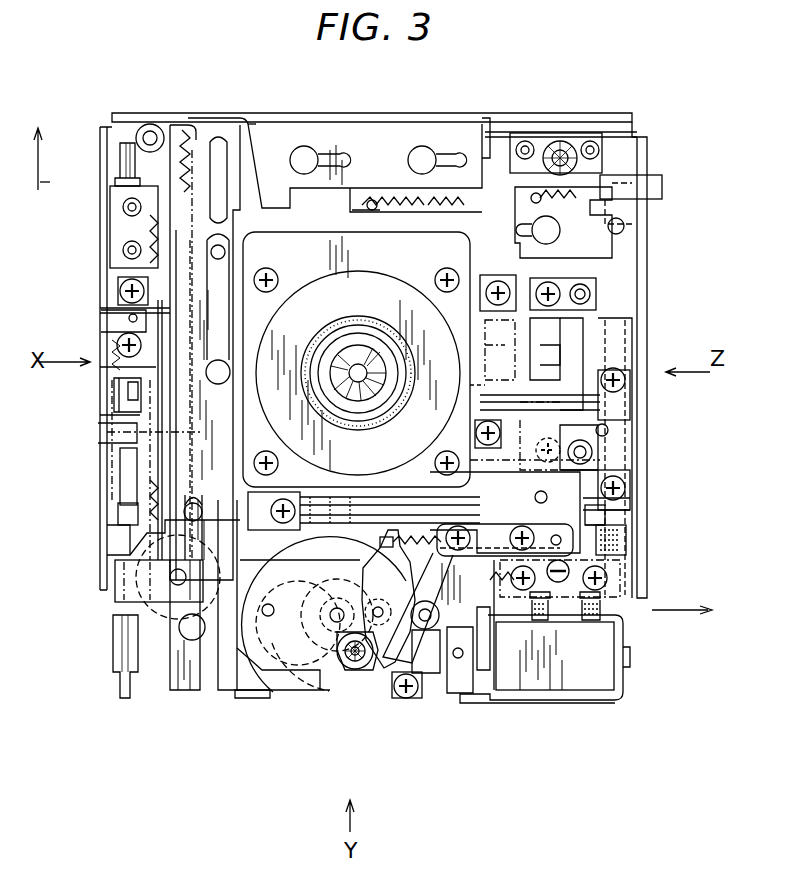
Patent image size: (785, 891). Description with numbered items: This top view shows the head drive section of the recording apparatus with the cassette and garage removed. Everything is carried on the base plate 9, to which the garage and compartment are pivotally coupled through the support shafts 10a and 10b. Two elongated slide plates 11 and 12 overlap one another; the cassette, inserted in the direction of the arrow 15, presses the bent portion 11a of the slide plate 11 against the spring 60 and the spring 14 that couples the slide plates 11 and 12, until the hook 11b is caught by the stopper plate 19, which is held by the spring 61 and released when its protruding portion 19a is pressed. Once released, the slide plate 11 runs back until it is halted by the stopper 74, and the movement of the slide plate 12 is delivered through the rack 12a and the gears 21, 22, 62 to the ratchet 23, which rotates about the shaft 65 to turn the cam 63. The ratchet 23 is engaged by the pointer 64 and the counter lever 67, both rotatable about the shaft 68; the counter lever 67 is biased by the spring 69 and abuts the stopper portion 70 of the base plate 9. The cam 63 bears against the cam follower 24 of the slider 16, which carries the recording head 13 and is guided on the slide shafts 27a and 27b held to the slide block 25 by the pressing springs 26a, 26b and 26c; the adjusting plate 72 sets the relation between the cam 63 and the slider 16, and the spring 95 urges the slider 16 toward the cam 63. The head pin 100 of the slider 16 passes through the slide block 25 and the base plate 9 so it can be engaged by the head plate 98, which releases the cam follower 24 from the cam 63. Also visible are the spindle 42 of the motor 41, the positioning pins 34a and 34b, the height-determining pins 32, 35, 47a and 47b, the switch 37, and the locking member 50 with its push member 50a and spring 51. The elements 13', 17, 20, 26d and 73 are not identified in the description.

The base plate 9 is at (640, 137).
The support shaft 10a is at (113, 650).
The support shaft 10b is at (120, 154).
The slide plate 11 is at (196, 125).
The bent portion 11a is at (214, 118).
The hook 11b is at (256, 122).
The slide plate 12 is at (112, 434).
The rack 12a is at (228, 692).
The recording head 13 is at (554, 364).
The head carriage reference 13' is at (452, 372).
The spring 14 is at (180, 182).
The arrow 15 is at (40, 180).
The slider 16 is at (628, 542).
The housing box 17 is at (538, 690).
The stopper plate 19 is at (358, 135).
The protruding portion 19a is at (484, 118).
The eject block 20 is at (115, 598).
The gear 21 is at (140, 547).
The gear 22 is at (200, 670).
The ratchet 23 is at (340, 704).
The cam follower 24 is at (440, 680).
The slide block 25 is at (622, 454).
The presser spring 26a is at (285, 492).
The pressing spring 26b is at (620, 514).
The pressing spring 26c is at (630, 410).
The motor rotor 26d is at (462, 397).
The slide shaft 27a is at (620, 524).
The slide shaft 27b is at (632, 430).
The height-determining pin 32 is at (608, 440).
The positioning pin 34a is at (356, 670).
The positioning pin 34b is at (560, 150).
The height-determining pin 35 is at (150, 124).
The switch 37 is at (120, 488).
The motor 41 is at (304, 290).
The spindle 42 is at (362, 365).
The height-determining pin 47a is at (592, 460).
The height-determining pin 47b is at (596, 292).
The locking member 50 is at (640, 267).
The push member 50a is at (666, 192).
The spring 51 is at (640, 216).
The spring 60 is at (124, 252).
The spring 61 is at (430, 215).
The gear 62 is at (318, 587).
The cam 63 is at (400, 700).
The pointer 64 is at (420, 695).
The shaft 65 is at (338, 608).
The counter lever 67 is at (486, 560).
The shaft 68 is at (494, 620).
The spring 69 is at (545, 584).
The stopper portion 70 is at (454, 694).
The adjusting plate 72 is at (483, 672).
The direction arrow 73 is at (682, 610).
The stopper 74 is at (118, 298).
The spring 95 is at (398, 550).
The head plate 98 is at (245, 700).
The head pin 100 is at (538, 496).